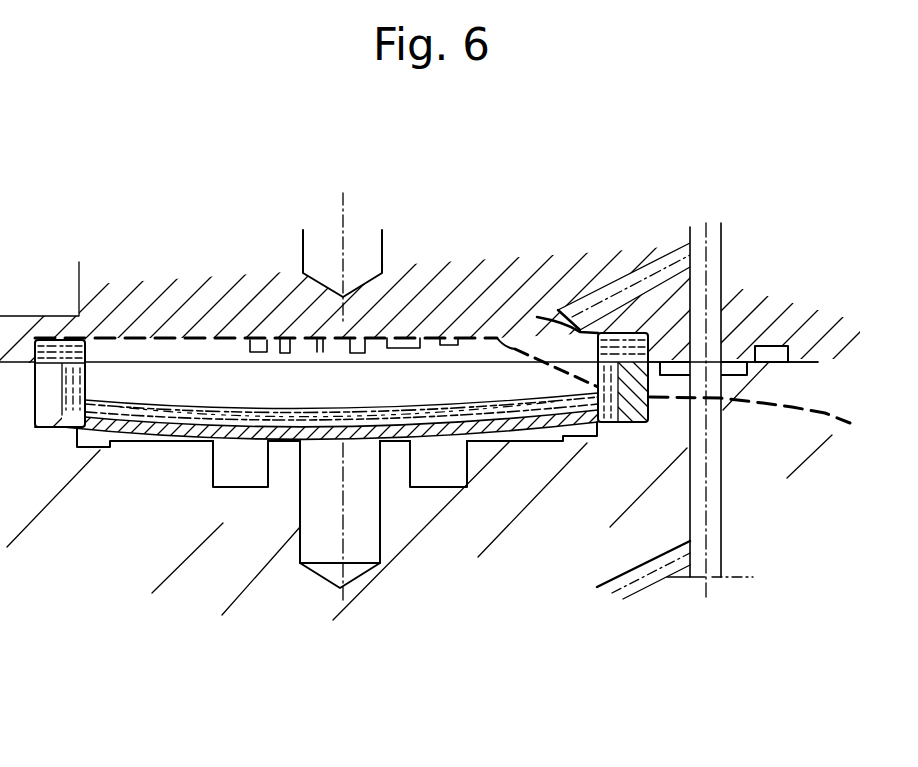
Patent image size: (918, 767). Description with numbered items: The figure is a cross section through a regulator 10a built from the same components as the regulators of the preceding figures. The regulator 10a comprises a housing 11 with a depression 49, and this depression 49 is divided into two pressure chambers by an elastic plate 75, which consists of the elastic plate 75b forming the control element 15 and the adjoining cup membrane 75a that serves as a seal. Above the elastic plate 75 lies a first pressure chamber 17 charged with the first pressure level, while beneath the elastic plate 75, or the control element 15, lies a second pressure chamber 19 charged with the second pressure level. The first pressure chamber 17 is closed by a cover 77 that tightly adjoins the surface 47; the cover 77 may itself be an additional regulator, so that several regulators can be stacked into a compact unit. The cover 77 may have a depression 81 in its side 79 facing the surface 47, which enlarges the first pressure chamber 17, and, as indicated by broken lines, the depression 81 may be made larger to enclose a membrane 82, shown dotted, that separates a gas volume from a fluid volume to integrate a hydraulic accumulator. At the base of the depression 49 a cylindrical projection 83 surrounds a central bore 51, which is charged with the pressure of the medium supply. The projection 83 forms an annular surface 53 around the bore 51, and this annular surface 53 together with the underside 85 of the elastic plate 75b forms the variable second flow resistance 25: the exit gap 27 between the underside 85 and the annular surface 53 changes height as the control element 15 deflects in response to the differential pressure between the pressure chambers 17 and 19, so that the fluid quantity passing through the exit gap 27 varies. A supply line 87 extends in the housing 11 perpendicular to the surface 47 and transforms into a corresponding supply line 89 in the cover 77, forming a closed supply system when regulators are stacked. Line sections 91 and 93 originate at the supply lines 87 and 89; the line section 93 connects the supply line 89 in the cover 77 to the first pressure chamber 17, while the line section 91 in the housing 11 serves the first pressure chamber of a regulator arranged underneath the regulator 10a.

The regulator 10a is at (141, 132).
The elastic plate 75 is at (129, 375).
The cup membrane 75a is at (173, 403).
The elastic plate 75b is at (152, 450).
The depression 81 is at (278, 338).
The first pressure chamber 17 is at (459, 383).
The cover 77 is at (598, 272).
The line section 93 is at (667, 262).
The supply line 89 is at (712, 263).
The side 79 is at (813, 357).
The surface 47 is at (790, 364).
The membrane 82 is at (846, 425).
The housing 11 is at (768, 462).
The supply line 87 is at (708, 517).
The line section 91 is at (652, 585).
The control element 15 is at (528, 441).
The second pressure chamber 19 is at (228, 473).
The annular surface 53 is at (393, 441).
The variable second flow resistance 25 is at (318, 443).
The exit gap 27 is at (343, 562).
The central bore 51 is at (368, 562).
The cylindrical projection 83 is at (290, 441).
The underside 85 is at (258, 441).
The depression 49 is at (36, 410).